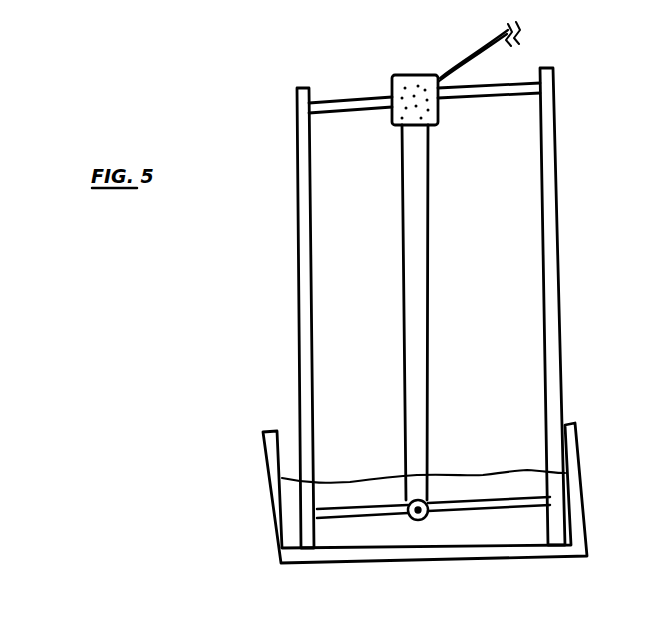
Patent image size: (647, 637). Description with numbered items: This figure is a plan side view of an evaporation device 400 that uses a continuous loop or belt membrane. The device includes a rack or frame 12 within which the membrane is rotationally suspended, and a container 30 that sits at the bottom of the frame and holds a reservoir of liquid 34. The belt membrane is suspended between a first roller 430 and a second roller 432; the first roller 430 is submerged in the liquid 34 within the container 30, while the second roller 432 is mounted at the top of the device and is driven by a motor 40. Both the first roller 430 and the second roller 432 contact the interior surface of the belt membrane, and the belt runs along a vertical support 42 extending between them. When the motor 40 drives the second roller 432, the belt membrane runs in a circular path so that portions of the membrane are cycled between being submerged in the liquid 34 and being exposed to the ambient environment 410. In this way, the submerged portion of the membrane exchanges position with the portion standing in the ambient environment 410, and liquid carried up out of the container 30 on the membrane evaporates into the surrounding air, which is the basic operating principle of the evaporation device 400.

The evaporation device 400 is at (588, 140).
The frame 12 is at (302, 227).
The second roller 432 is at (410, 72).
The vertical support bar 42 is at (430, 268).
The motor 40 is at (438, 120).
The ambient environment 410 is at (507, 362).
The liquid 34 is at (353, 482).
The first roller 430 is at (423, 520).
The container 30 is at (585, 525).